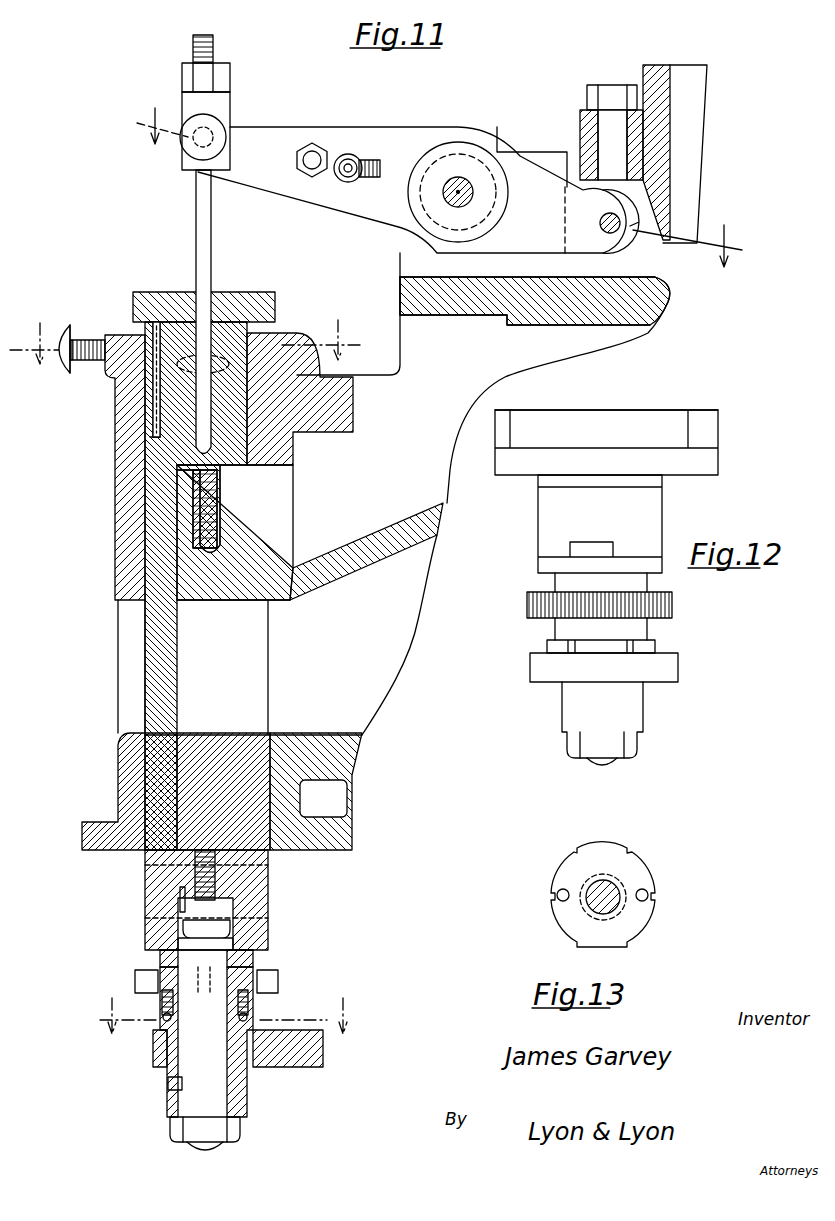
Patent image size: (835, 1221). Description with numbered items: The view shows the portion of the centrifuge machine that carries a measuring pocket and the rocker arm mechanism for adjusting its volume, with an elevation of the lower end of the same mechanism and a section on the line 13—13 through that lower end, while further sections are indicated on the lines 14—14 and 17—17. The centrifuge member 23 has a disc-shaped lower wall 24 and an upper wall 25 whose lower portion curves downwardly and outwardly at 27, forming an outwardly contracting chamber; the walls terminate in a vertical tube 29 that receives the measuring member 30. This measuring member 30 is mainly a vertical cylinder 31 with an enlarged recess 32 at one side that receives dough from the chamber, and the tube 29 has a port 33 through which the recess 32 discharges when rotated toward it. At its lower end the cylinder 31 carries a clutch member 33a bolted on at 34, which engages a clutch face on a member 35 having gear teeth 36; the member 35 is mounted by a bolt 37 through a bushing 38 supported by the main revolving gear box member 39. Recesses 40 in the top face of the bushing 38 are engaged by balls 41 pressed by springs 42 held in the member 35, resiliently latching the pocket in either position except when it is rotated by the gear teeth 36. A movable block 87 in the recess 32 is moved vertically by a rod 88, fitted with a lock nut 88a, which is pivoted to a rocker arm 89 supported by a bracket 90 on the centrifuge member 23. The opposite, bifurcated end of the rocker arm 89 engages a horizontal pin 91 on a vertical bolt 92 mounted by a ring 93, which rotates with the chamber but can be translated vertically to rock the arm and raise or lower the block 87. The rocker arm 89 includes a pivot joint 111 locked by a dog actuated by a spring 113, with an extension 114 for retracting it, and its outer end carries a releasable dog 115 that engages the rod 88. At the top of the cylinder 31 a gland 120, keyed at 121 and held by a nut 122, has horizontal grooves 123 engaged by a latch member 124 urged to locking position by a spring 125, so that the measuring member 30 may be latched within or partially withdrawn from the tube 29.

In FIG. 11, the section line 13— 13 is at (223, 1007).
In FIG. 11, the section line 14— 14 is at (439, 179).
In FIG. 11, the section line 17— 17 is at (185, 330).
In FIG. 11, the centrifuge member 23 is at (458, 505).
In FIG. 12, the centrifuge member 23 is at (705, 430).
In FIG. 11, the lower wall 24 is at (374, 739).
In FIG. 11, the upper wall 25 is at (441, 546).
In FIG. 11, the curved lower portion of upper wall 27 is at (322, 590).
In FIG. 11, the vertical tube 29 is at (303, 506).
In FIG. 12, the vertical tube 29 is at (620, 401).
In FIG. 11, the measuring member 30 is at (136, 624).
In FIG. 11, the vertical cylinder 31 is at (160, 784).
In FIG. 11, the recess 32 is at (257, 686).
In FIG. 11, the port 33 is at (122, 692).
In FIG. 11, the clutch member 33a is at (280, 900).
In FIG. 12, the clutch member 33a is at (650, 522).
In FIG. 11, the bolt 34 is at (205, 872).
In FIG. 11, the member with clutch face and gear teeth 35 is at (252, 958).
In FIG. 12, the member with clutch face and gear teeth 35 is at (655, 565).
In FIG. 11, the gear teeth 36 is at (276, 981).
In FIG. 12, the gear teeth 36 is at (674, 605).
In FIG. 11, the bolt 37 is at (200, 1053).
In FIG. 12, the bolt 37 is at (604, 763).
In FIG. 13, the bolt 37 is at (606, 880).
In FIG. 11, the bushing 38 is at (232, 1086).
In FIG. 12, the bushing 38 is at (650, 648).
In FIG. 13, the bushing 38 is at (635, 866).
In FIG. 11, the main revolving gear box member 39 is at (318, 1056).
In FIG. 12, the main revolving gear box member 39 is at (680, 670).
In FIG. 13, the recess 40 is at (646, 892).
In FIG. 11, the ball 41 is at (250, 1006).
In FIG. 11, the spring 42 is at (161, 1004).
In FIG. 11, the movable block 87 is at (190, 531).
In FIG. 11, the rod 88 is at (202, 238).
In FIG. 11, the lock nut 88a is at (235, 54).
In FIG. 11, the rocker arm 89 is at (362, 140).
In FIG. 11, the bracket 90 is at (536, 158).
In FIG. 11, the horizontal pin 91 is at (611, 234).
In FIG. 11, the vertical bolt 92 is at (611, 97).
In FIG. 11, the ring 93 is at (585, 112).
In FIG. 11, the pivot joint 111 is at (318, 145).
In FIG. 11, the spring 113 is at (378, 150).
In FIG. 11, the extension 114 is at (347, 184).
In FIG. 11, the releasable dog 115 is at (197, 143).
In FIG. 11, the gland 120 is at (142, 400).
In FIG. 11, the key 121 is at (150, 422).
In FIG. 11, the nut 122 is at (135, 300).
In FIG. 11, the horizontal groove 123 is at (278, 385).
In FIG. 11, the latch member 124 is at (88, 333).
In FIG. 11, the spring 125 is at (78, 365).